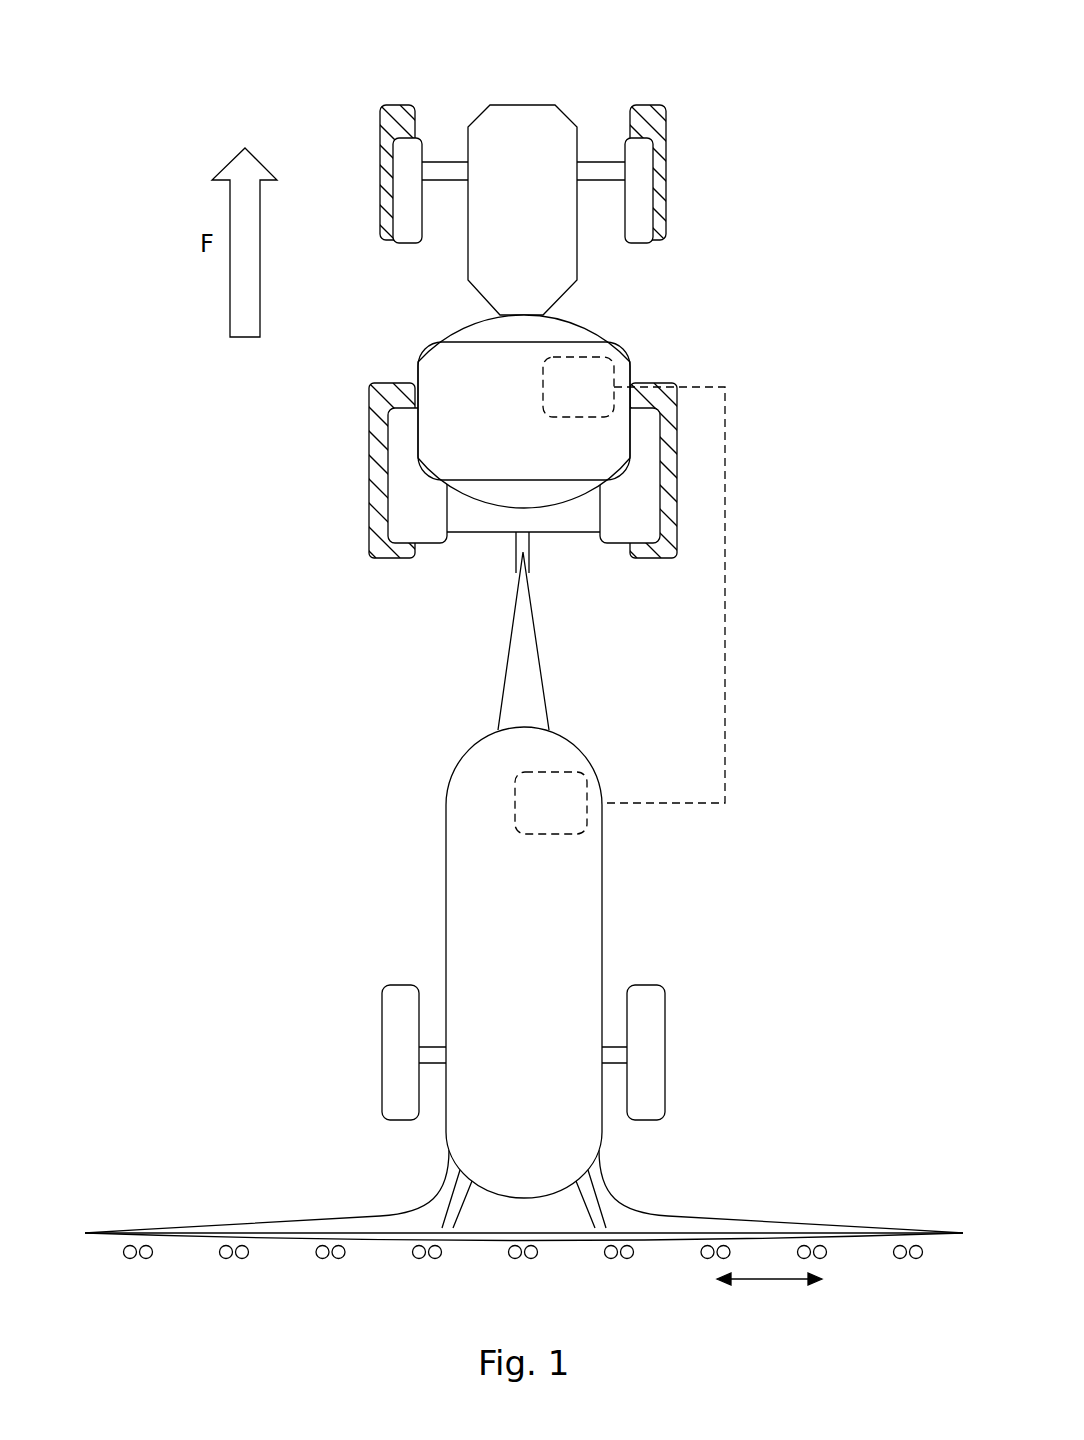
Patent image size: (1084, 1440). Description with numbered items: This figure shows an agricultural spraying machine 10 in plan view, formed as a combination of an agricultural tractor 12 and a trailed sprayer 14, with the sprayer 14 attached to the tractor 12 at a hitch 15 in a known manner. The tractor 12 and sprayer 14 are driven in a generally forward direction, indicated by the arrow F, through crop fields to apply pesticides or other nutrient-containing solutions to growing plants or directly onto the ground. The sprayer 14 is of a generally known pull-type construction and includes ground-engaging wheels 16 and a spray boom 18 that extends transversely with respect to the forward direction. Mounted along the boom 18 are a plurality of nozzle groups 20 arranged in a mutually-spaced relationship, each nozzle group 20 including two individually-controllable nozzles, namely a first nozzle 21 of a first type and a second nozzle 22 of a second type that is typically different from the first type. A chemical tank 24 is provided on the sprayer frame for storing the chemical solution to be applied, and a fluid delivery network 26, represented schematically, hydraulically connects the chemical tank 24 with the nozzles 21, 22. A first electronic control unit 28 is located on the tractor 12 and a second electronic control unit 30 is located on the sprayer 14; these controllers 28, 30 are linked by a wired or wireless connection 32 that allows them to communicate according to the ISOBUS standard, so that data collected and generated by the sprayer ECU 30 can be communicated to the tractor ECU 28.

The agricultural spraying machine 10 is at (800, 148).
The agricultural tractor 12 is at (568, 118).
The trailed sprayer 14 is at (601, 882).
The hitch 15 is at (528, 558).
The ground-engaging wheels 16 is at (382, 1020).
The spray boom 18 is at (893, 1232).
The nozzle groups 20 is at (138, 1258).
The first nozzle 21 is at (126, 1258).
The second nozzle 22 is at (151, 1259).
The chemical tank 24 is at (446, 805).
The fluid delivery network 26 is at (612, 1198).
The first electronic control unit 28 is at (620, 357).
The second electronic control unit 30 is at (587, 783).
The wired or wireless connection 32 is at (725, 565).